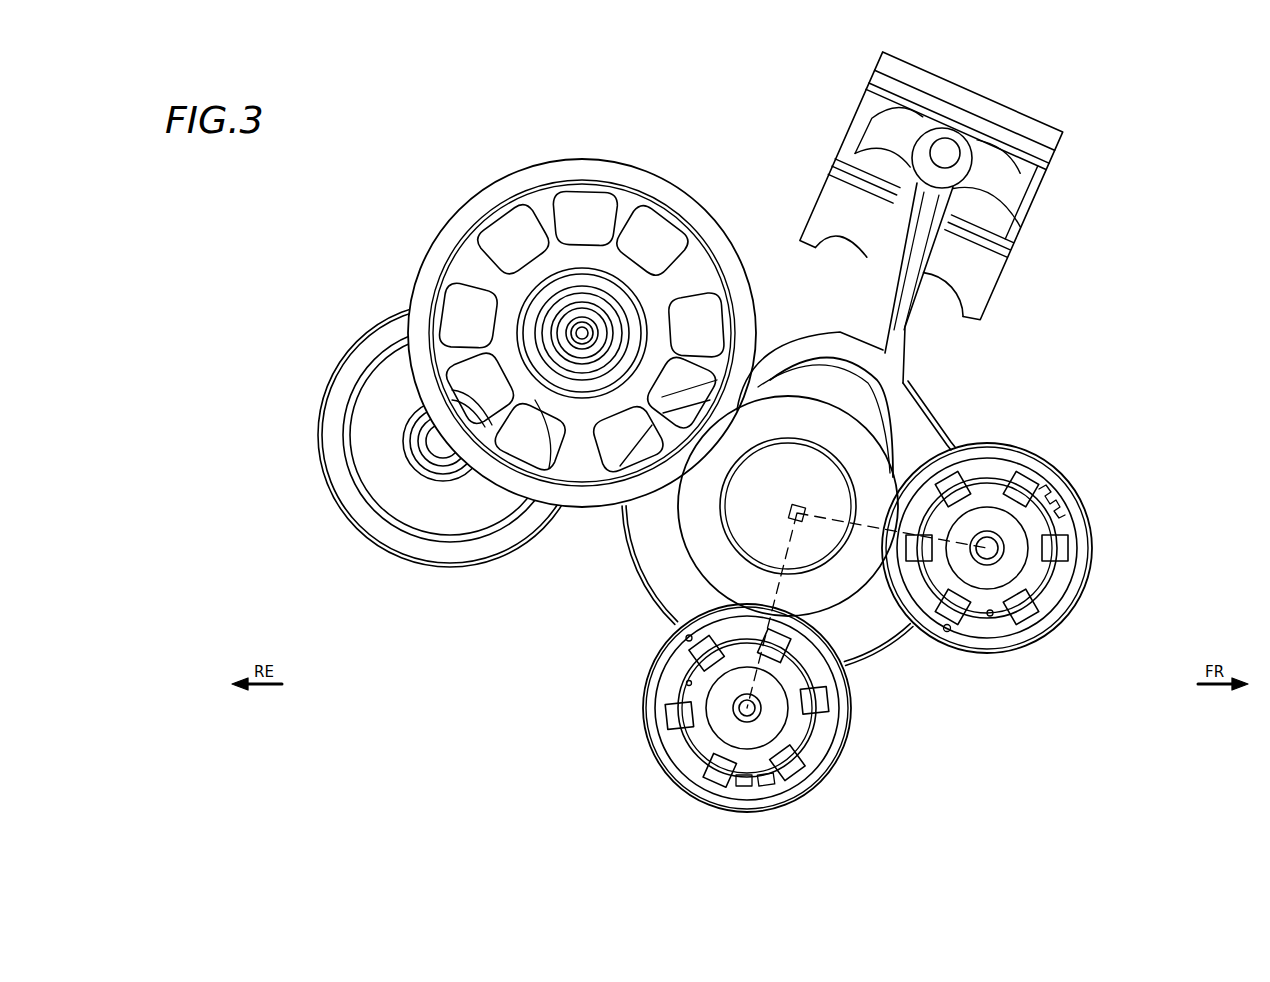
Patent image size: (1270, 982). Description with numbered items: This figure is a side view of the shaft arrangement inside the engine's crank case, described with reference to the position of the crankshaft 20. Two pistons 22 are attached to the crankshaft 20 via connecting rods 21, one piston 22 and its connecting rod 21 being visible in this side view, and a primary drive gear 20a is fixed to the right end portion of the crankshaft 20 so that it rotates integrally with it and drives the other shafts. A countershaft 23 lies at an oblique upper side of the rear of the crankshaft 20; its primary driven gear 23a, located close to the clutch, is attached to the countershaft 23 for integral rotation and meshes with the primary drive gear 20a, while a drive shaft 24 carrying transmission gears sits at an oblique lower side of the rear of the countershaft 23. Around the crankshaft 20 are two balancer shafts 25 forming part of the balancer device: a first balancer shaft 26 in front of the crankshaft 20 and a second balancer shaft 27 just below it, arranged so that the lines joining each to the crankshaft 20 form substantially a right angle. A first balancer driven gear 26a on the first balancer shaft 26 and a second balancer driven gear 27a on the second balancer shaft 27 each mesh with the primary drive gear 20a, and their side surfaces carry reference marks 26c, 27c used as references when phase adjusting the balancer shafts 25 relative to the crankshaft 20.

The crankshaft 20 is at (840, 425).
The primary drive gear 20a is at (852, 478).
The connecting rod 21 is at (862, 327).
The piston 22 is at (833, 193).
The countershaft 23 is at (582, 286).
The primary driven gear 23a is at (622, 178).
The drive shaft 24 is at (440, 444).
The balancer shafts 25 is at (997, 712).
The first balancer shaft 26 is at (1033, 584).
The first balancer driven gear 26a is at (1087, 533).
The reference mark 26c is at (944, 631).
The second balancer shaft 27 is at (760, 720).
The second balancer driven gear 27a is at (818, 777).
The reference mark 27c is at (685, 637).